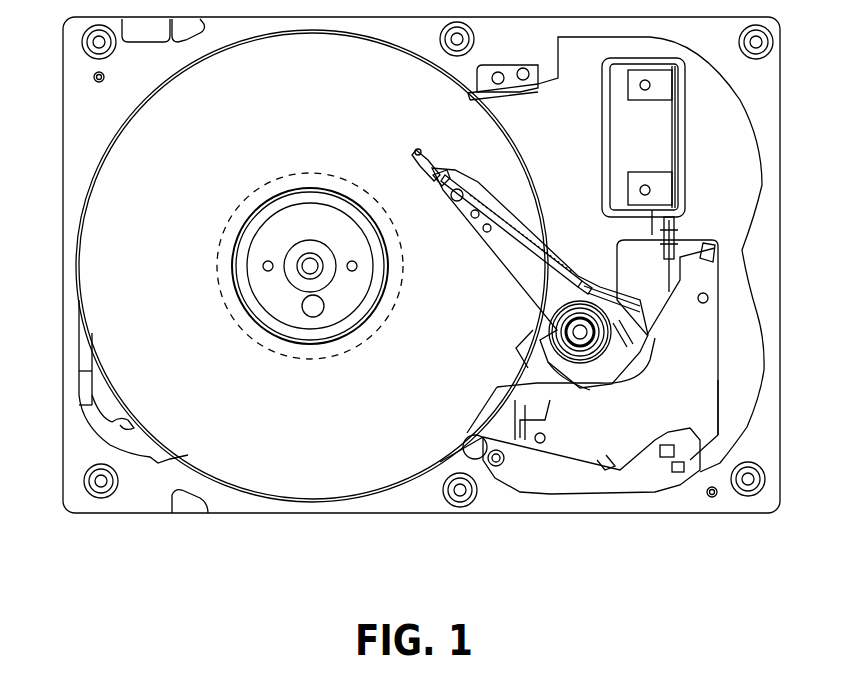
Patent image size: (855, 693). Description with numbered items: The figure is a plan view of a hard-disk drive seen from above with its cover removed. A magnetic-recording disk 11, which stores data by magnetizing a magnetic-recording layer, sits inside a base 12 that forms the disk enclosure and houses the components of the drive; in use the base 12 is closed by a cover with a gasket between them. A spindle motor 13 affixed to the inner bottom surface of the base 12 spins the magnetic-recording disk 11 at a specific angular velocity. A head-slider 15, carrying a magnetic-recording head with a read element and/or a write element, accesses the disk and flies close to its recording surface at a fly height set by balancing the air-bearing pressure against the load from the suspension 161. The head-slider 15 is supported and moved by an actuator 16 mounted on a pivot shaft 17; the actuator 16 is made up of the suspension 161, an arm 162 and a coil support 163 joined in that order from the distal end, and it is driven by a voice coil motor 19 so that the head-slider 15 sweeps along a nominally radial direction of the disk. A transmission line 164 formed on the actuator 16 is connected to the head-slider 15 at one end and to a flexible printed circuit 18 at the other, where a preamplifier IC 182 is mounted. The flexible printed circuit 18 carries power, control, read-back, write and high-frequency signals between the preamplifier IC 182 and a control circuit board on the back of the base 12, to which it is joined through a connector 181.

The magnetic-recording disk 11 is at (79, 333).
The base 12 is at (340, 513).
The spindle motor 13 is at (322, 360).
The head-slider 15 is at (416, 152).
The actuator 16 is at (491, 265).
The pivot shaft 17 is at (540, 355).
The flexible printed circuit 18 is at (634, 259).
The voice coil motor 19 is at (560, 467).
The suspension 161 is at (440, 180).
The arm 162 is at (485, 252).
The coil support 163 is at (720, 382).
The transmission line 164 is at (489, 200).
The connector 181 is at (600, 80).
The preamplifier IC 182 is at (590, 293).